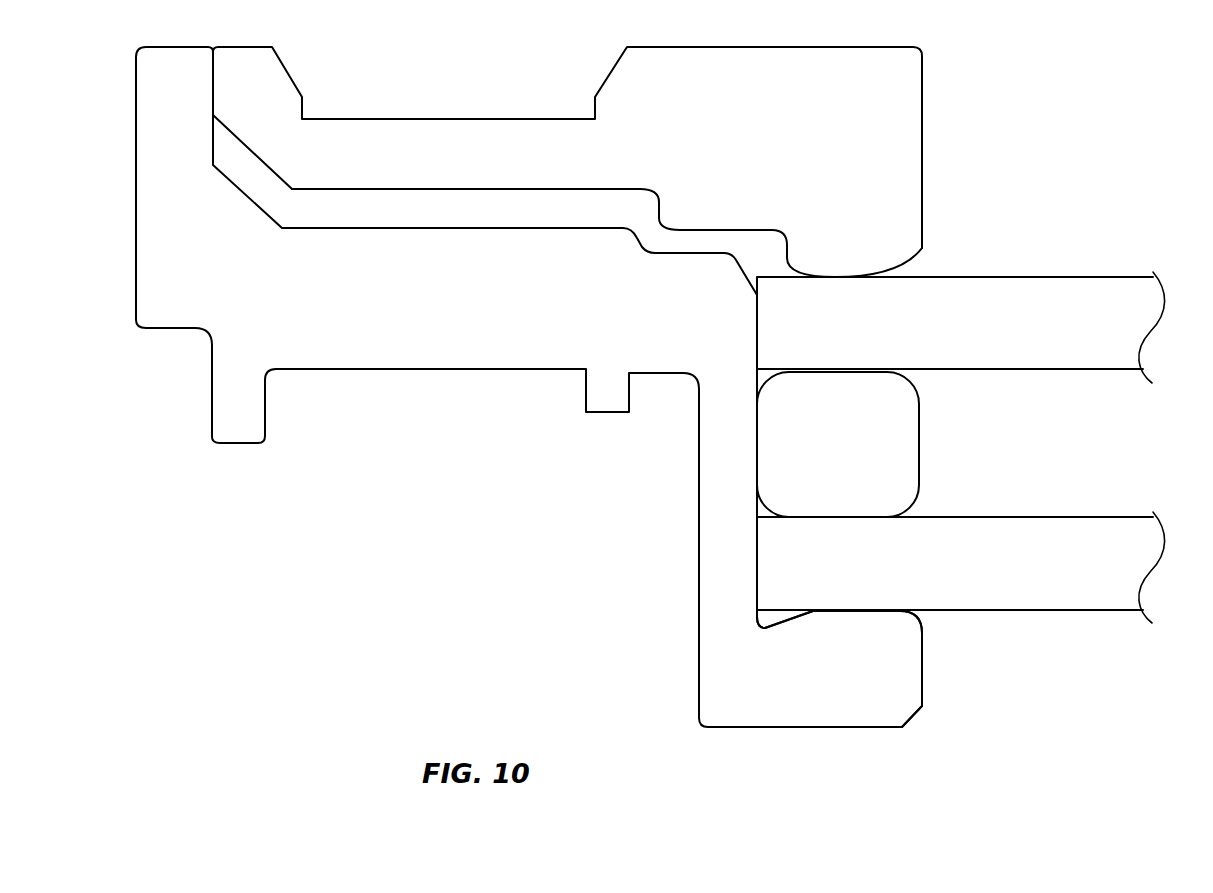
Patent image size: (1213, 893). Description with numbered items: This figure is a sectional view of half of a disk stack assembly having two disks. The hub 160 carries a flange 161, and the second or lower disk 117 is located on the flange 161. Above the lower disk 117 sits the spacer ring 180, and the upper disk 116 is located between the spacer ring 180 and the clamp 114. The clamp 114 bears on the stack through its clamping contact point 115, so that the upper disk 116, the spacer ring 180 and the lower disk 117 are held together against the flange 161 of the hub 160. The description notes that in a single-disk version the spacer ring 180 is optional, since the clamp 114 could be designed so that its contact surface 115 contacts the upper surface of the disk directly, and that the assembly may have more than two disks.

The clamp 114 is at (426, 145).
The hub 160 is at (426, 253).
The clamping contact point 115 is at (835, 275).
The upper disk 116 is at (1059, 285).
The lower disk 117 is at (1059, 524).
The spacer ring 180 is at (917, 435).
The flange 161 is at (912, 688).